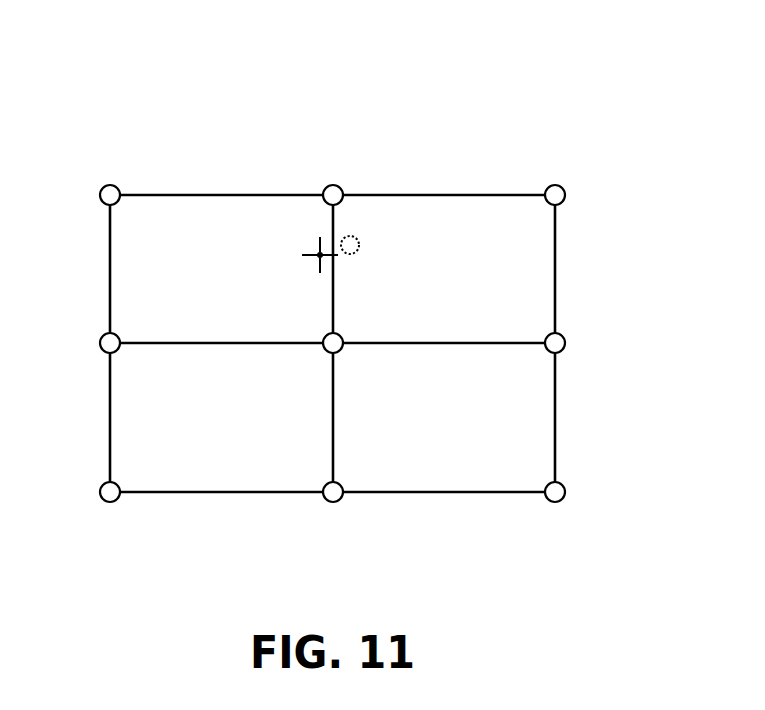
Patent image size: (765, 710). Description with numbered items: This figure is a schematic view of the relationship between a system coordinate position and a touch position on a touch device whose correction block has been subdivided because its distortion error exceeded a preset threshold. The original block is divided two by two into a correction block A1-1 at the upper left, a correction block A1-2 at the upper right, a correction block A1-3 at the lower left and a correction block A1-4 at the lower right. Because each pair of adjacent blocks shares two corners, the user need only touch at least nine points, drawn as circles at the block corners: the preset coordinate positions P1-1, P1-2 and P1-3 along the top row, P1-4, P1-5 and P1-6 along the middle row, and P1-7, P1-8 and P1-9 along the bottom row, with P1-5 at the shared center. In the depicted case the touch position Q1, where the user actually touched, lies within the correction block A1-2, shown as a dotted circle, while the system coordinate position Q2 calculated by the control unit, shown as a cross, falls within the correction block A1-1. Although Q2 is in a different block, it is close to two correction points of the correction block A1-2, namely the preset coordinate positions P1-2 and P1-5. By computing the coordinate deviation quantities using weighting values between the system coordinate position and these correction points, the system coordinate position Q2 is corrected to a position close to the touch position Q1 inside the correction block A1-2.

The correction point P1-1 is at (110, 185).
The preset coordinate position P1-2 is at (333, 185).
The correction point P1-3 is at (555, 185).
The correction point P1-4 is at (100, 343).
The preset coordinate position P1-5 is at (340, 350).
The correction point P1-6 is at (565, 343).
The correction point P1-7 is at (110, 503).
The correction point P1-8 is at (333, 502).
The correction point P1-9 is at (555, 502).
The correction block A1-1 is at (221, 269).
The correction block A1-2 is at (444, 269).
The correction block A1-3 is at (221, 417).
The correction block A1-4 is at (444, 417).
The touch position Q1 is at (359, 246).
The system coordinate position Q2 is at (316, 254).